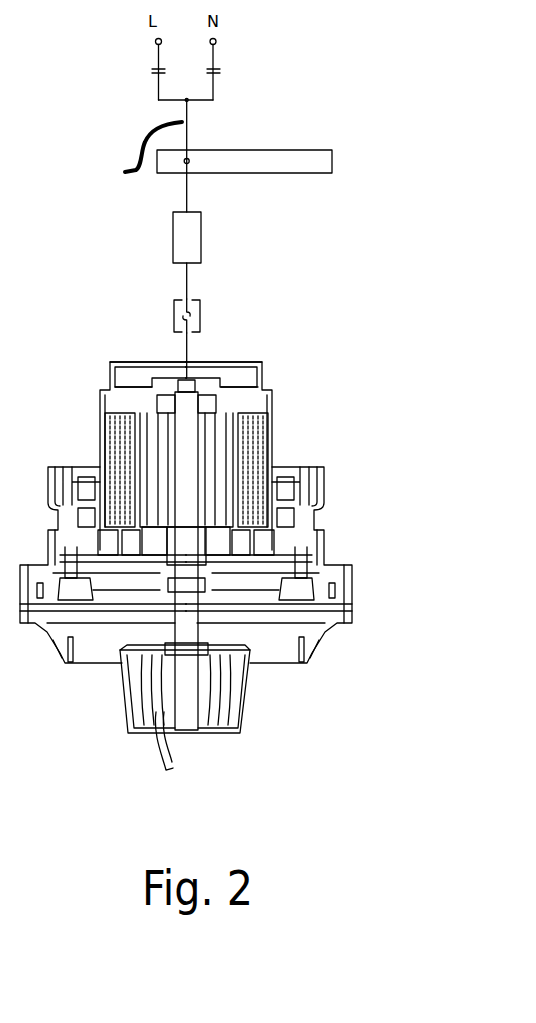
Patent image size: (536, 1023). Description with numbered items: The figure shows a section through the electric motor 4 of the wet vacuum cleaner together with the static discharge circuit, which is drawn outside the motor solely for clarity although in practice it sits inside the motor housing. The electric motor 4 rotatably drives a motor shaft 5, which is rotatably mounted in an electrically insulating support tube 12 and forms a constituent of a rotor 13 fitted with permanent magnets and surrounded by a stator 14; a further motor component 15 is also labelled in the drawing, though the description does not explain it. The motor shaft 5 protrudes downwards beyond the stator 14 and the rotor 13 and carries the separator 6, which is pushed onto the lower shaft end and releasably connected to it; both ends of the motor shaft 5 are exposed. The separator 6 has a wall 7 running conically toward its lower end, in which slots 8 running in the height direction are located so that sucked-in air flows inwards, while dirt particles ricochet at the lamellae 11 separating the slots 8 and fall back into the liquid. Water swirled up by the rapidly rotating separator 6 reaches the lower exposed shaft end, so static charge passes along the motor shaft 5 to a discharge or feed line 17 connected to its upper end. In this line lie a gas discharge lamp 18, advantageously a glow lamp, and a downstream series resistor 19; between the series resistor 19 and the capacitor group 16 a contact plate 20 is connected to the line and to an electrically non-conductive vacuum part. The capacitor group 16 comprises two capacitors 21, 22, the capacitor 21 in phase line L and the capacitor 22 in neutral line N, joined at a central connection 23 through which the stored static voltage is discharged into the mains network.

The electric motor 4 is at (330, 359).
The motor shaft 5 is at (185, 487).
The separator 6 is at (250, 710).
The wall 7 is at (250, 680).
The slots 8 is at (217, 713).
The lamellae 11 is at (170, 730).
The support tube 12 is at (197, 545).
The rotor 13 is at (167, 465).
The stator 14 is at (118, 445).
The stator 15 is at (122, 440).
The capacitor group 16 is at (230, 71).
The discharge or feed line 17 is at (247, 332).
The gas discharge lamp 18 is at (200, 312).
The series resistor 19 is at (203, 241).
The contact plate 20 is at (317, 160).
The capacitor 21 is at (158, 74).
The capacitor 22 is at (217, 74).
The central connection 23 is at (188, 103).